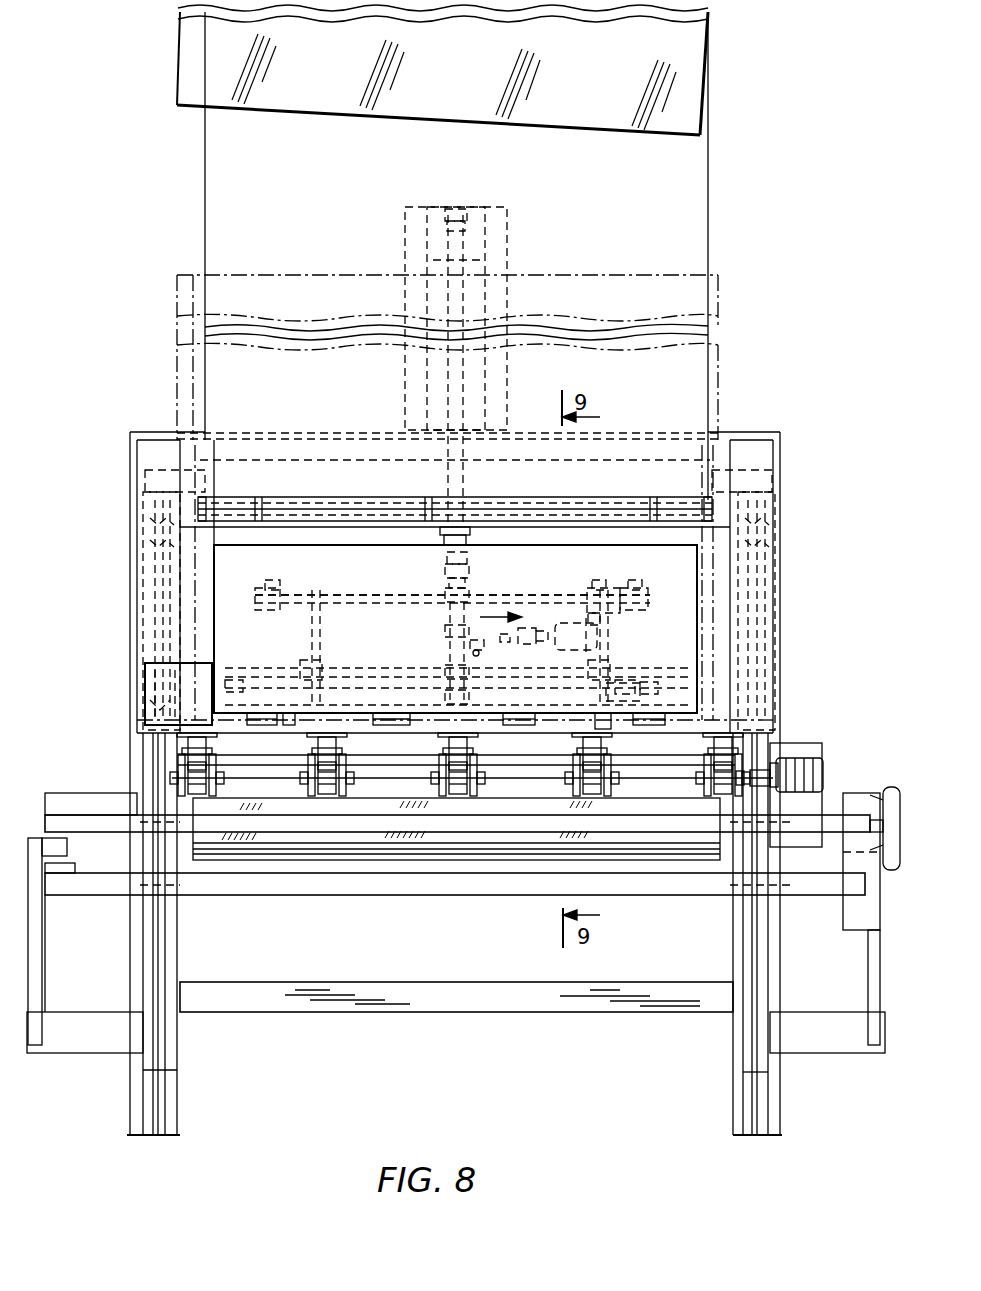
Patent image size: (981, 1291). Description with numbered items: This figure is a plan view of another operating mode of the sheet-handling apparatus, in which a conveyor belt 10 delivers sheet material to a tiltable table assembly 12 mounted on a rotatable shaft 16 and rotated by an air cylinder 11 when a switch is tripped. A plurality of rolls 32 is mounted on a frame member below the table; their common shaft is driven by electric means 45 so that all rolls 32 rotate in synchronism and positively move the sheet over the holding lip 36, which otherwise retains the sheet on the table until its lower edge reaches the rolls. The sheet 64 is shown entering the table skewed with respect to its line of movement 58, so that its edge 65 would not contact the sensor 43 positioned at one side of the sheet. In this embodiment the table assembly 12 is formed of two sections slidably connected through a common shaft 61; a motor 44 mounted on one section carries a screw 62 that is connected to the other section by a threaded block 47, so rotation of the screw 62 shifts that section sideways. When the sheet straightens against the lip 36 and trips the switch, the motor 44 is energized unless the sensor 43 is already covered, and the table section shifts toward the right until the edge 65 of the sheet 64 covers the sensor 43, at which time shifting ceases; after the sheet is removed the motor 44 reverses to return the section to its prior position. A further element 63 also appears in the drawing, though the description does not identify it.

The conveyor belt 10 is at (228, 160).
The air cylinder 11 is at (468, 592).
The tiltable table assembly 12 is at (296, 578).
The rotatable shaft 16 is at (642, 700).
The rolls 32 is at (205, 782).
The holding lip 36 is at (263, 726).
The sensor 43 is at (722, 632).
The motor 44 is at (598, 630).
The electric means 45 is at (822, 770).
The threaded block 47 is at (525, 627).
The line of movement 58 is at (455, 140).
The common shaft 61 is at (381, 596).
The screw 62 is at (545, 627).
The pivot 63 is at (490, 640).
The sheet 64 is at (476, 68).
The edge 65 is at (707, 113).